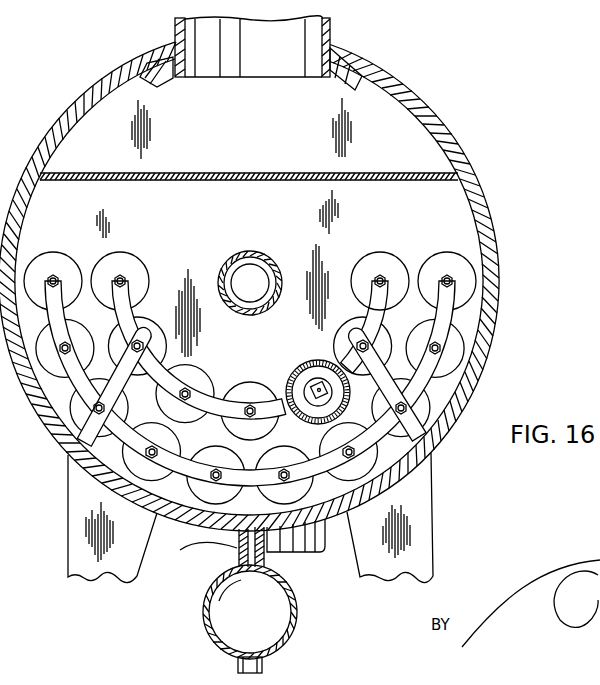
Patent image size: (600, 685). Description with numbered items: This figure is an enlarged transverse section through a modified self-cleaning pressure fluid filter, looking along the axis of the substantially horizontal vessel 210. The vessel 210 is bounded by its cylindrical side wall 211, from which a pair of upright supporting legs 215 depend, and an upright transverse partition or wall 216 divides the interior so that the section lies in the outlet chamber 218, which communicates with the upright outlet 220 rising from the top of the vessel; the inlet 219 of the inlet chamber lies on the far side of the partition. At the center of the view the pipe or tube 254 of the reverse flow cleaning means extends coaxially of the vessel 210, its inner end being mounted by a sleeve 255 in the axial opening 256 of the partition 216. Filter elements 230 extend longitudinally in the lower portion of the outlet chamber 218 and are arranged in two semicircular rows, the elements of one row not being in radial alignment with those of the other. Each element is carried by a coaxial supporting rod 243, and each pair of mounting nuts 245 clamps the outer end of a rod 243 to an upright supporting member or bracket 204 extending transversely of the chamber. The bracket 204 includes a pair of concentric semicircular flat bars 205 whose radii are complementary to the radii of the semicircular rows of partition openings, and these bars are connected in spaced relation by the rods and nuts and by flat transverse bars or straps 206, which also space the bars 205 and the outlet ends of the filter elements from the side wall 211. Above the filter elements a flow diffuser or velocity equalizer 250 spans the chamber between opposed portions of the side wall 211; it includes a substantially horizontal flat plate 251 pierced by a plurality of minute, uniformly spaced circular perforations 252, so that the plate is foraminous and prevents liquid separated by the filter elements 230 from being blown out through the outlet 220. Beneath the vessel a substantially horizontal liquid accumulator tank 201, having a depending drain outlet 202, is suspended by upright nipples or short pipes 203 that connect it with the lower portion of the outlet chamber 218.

The liquid accumulator tank 201 is at (207, 631).
The drain outlet 202 is at (264, 664).
The upright nipples or short pipes 203 is at (268, 560).
The upright supporting member or bracket 204 is at (468, 321).
The concentric semicircular flat bars 205 is at (145, 300).
The flat transverse bars or straps 206 is at (78, 450).
The vessel 210 is at (112, 72).
The side wall 211 is at (487, 203).
The supporting legs 215 is at (431, 506).
The transverse partition or wall 216 is at (392, 98).
The outlet chamber 218 is at (385, 219).
The inlet 219 is at (203, 540).
The upright outlet 220 is at (332, 30).
The filter elements 230 is at (66, 254).
The coaxial supporting rods 243 is at (365, 255).
The mounting nuts 245 is at (200, 380).
The flow diffuser or velocity equalizer 250 is at (229, 172).
The flat member or plate 251 is at (300, 173).
The circular openings or perforations 252 is at (247, 180).
The pipe or tube 254 is at (273, 261).
The sleeve 255 is at (258, 311).
The axial opening 256 is at (243, 253).